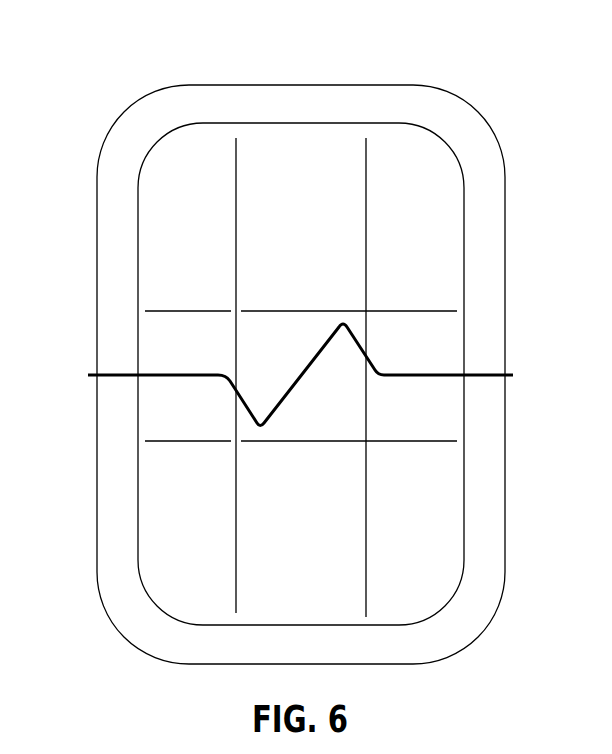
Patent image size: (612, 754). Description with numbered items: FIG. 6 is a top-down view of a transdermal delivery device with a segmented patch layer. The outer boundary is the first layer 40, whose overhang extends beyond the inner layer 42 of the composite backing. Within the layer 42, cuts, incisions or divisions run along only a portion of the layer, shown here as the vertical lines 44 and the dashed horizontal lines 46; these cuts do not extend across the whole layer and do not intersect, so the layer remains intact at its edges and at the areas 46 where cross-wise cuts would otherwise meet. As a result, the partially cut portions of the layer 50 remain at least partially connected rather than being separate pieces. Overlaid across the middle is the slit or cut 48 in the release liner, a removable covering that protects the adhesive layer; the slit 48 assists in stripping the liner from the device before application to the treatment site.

The first layer 40 is at (400, 102).
The layer 42 is at (138, 237).
The vertical partition lines 44 is at (367, 195).
The intact areas 46 is at (366, 441).
The slit or cut 48 is at (418, 372).
The partially cut portions of the layer 50 is at (295, 210).